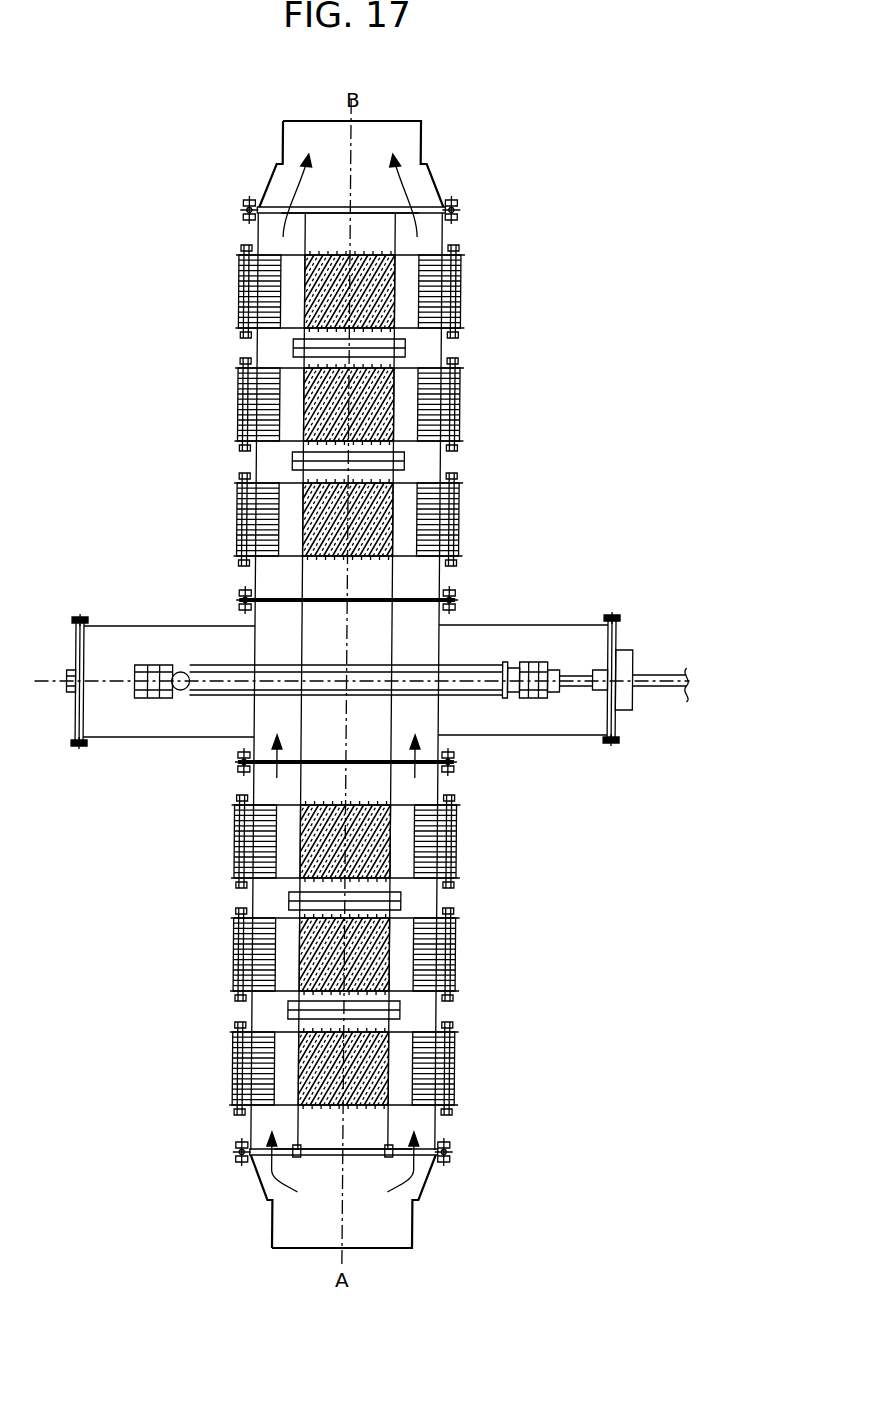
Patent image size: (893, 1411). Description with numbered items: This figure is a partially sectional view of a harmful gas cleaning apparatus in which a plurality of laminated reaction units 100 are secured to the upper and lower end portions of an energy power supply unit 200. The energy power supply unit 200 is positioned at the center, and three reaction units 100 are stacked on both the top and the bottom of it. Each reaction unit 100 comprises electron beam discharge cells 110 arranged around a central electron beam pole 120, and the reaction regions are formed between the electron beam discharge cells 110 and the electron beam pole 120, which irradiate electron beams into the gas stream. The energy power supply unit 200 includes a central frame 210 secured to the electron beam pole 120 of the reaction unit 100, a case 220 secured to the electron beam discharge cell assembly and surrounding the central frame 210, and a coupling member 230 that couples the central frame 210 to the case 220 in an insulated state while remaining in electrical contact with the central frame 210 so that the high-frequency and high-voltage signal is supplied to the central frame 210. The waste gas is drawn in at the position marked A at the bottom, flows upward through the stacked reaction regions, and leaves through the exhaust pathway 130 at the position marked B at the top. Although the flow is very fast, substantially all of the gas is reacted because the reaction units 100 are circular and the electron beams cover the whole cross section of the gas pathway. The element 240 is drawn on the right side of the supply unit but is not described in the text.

The reaction unit 100 is at (225, 533).
The electron beam discharge cells 110 is at (441, 284).
The electron beam pole 120 is at (398, 308).
The exhaust pathway 130 is at (422, 140).
The energy power supply unit 200 is at (597, 622).
The central frame 210 is at (397, 631).
The case 220 is at (513, 632).
The coupling member 230 is at (480, 680).
The actuator 240 is at (627, 663).